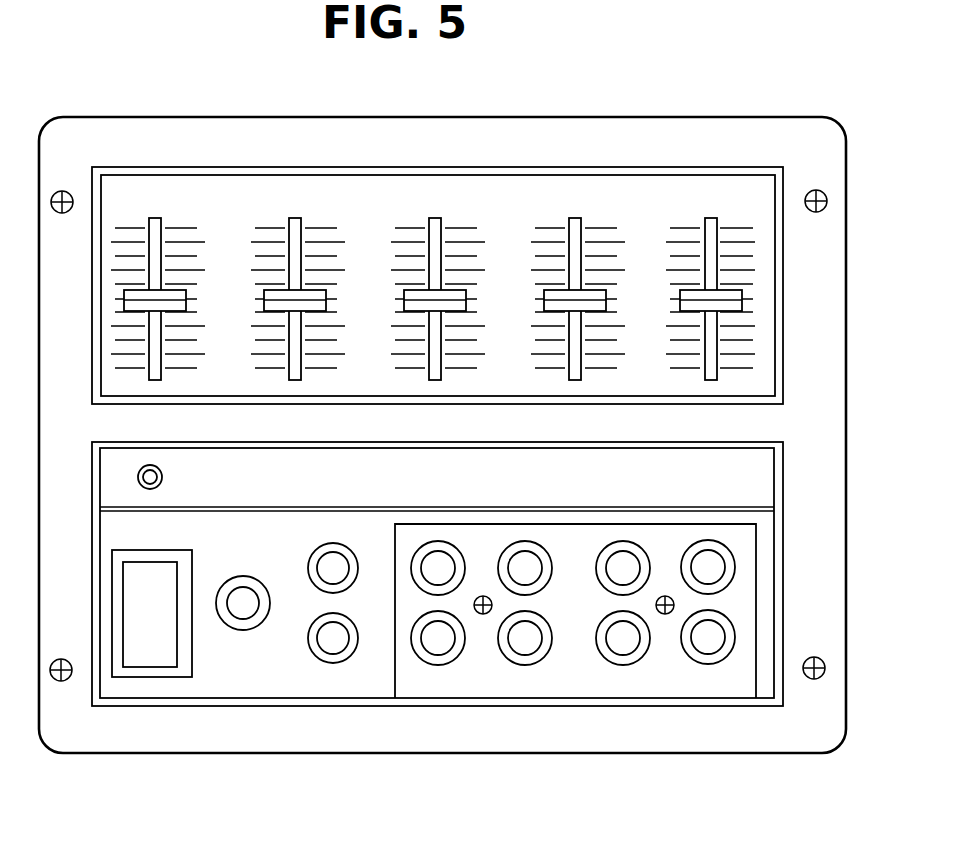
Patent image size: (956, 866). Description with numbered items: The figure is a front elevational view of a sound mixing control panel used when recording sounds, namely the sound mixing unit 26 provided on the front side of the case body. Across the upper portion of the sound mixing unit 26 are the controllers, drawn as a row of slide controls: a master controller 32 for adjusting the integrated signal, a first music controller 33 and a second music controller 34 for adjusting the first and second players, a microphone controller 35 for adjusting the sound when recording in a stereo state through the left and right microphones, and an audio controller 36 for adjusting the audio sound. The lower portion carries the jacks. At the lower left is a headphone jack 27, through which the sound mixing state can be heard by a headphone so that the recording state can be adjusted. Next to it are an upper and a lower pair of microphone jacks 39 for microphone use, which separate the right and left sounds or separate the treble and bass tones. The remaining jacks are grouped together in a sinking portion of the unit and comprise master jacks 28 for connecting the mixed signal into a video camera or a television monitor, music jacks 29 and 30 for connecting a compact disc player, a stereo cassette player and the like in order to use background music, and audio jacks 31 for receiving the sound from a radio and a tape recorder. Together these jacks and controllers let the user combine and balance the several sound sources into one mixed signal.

The sound mixing unit 26 is at (743, 102).
The headphone jack 27 is at (237, 617).
The master jacks 28 is at (420, 582).
The music jacks 29 is at (507, 582).
The music jacks 30 is at (605, 582).
The audio jacks 31 is at (697, 583).
The master controller 32 is at (163, 216).
The No. 1 music controller 33 is at (310, 217).
The No. 2 music controller 34 is at (447, 217).
The microphone controller 35 is at (585, 215).
The audio controller 36 is at (703, 218).
The microphone jacks 39 is at (313, 582).